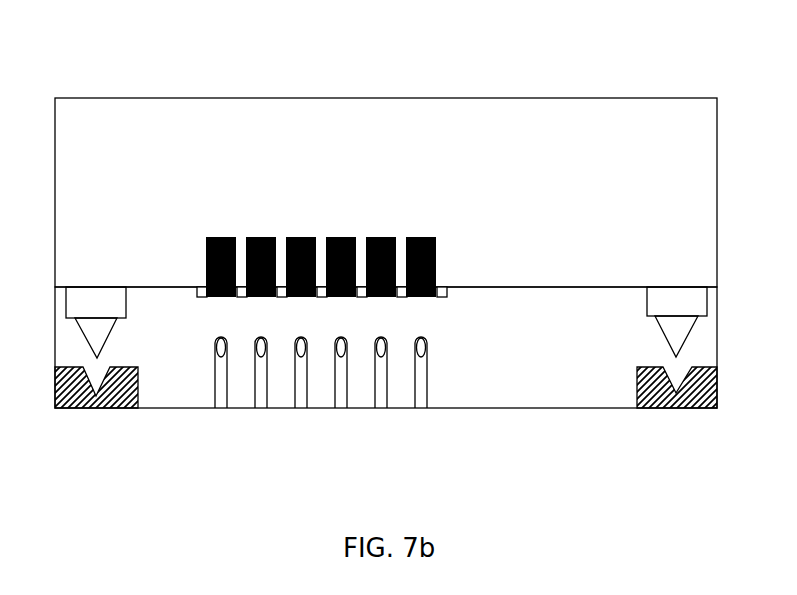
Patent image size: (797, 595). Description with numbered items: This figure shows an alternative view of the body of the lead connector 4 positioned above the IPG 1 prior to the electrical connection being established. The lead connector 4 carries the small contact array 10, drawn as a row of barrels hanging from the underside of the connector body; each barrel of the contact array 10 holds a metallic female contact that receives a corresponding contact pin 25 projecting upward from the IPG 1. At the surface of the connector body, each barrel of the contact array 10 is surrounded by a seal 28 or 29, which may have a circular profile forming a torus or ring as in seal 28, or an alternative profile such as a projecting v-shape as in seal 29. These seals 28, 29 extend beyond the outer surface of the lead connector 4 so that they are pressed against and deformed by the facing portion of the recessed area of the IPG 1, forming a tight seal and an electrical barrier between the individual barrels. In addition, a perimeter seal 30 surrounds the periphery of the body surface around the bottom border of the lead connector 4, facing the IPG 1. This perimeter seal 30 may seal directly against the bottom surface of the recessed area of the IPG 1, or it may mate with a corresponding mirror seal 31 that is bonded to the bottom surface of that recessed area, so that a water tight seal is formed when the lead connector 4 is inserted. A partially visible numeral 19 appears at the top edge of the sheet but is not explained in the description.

The IPG 1 is at (165, 390).
The lead connector 4 is at (667, 87).
The small contact array 10 is at (257, 227).
The element 19 (partially visible) 19 is at (259, 5).
The contact pin 25 is at (415, 387).
The circular seal 28 is at (411, 230).
The seal 29 is at (447, 285).
The perimeter seal 30 is at (688, 298).
The mirror seal 31 is at (687, 417).